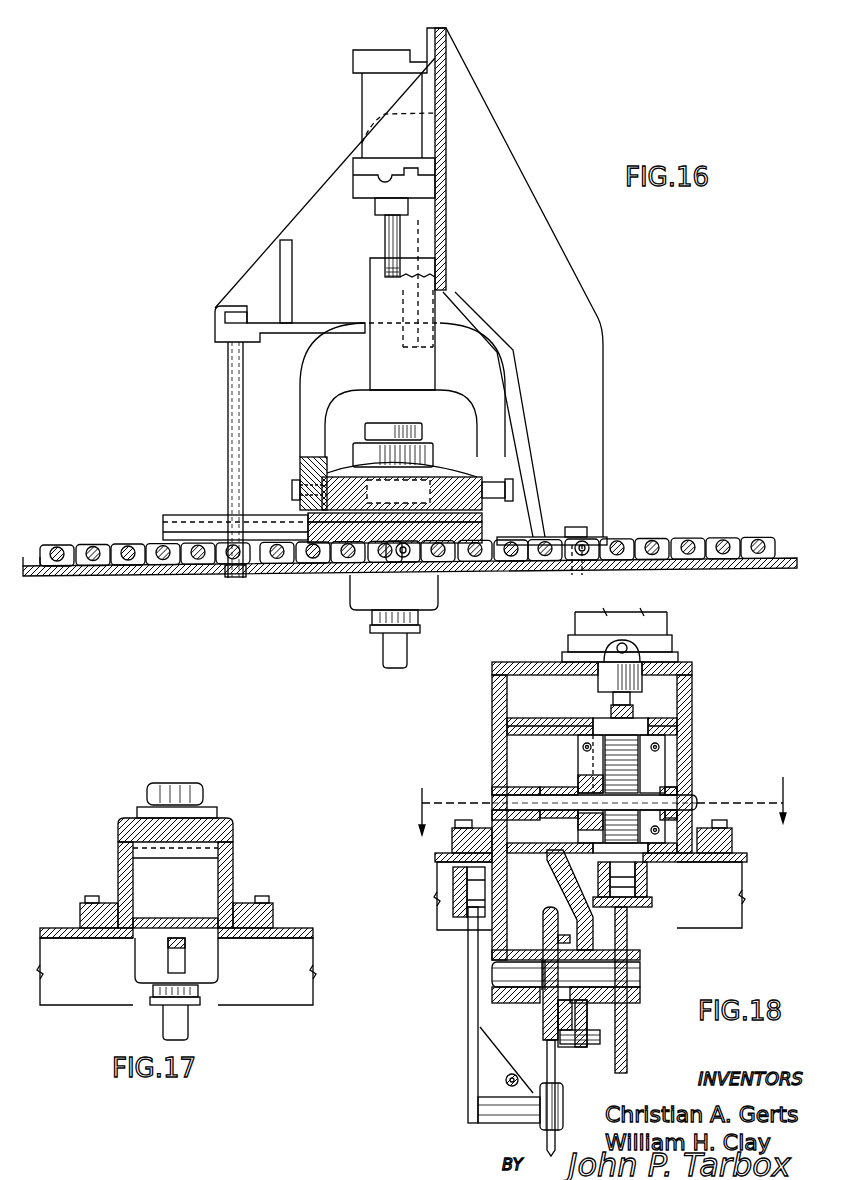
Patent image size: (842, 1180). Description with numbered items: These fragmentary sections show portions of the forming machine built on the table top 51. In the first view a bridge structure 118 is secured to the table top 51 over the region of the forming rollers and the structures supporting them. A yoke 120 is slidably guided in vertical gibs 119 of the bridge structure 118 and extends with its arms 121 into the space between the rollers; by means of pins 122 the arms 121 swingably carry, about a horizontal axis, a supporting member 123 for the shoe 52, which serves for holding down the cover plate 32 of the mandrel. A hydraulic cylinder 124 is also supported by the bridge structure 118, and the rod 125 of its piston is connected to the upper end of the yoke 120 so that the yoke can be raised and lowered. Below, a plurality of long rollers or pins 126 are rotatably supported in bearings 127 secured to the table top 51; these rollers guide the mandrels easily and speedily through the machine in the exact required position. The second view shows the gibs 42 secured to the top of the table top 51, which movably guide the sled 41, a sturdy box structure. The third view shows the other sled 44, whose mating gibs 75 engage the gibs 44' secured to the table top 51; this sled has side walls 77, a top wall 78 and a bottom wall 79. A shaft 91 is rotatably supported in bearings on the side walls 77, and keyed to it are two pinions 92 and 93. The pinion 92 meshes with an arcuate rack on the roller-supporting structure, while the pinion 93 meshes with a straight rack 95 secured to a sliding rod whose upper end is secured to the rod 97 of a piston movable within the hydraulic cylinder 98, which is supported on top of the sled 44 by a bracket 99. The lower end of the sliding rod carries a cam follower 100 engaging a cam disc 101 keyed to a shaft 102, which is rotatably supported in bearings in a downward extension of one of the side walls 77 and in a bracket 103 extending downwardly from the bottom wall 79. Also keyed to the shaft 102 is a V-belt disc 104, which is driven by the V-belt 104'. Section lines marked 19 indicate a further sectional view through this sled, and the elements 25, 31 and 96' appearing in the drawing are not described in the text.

In FIG. 16, the bridge structure 118 is at (507, 176).
In FIG. 16, the vertical gibs 119 is at (420, 243).
In FIG. 16, the yoke 120 is at (372, 306).
In FIG. 16, the arms 121 is at (305, 419).
In FIG. 16, the pins 122 is at (300, 490).
In FIG. 16, the supporting member 123 is at (443, 475).
In FIG. 16, the hydraulic cylinder 124 is at (362, 124).
In FIG. 16, the rod 125 is at (388, 244).
In FIG. 16, the long rollers or pins 126 is at (92, 545).
In FIG. 16, the bearings 127 is at (158, 549).
In FIG. 16, the shoe 52 is at (420, 490).
In FIG. 16, the cover plate 32 is at (480, 516).
In FIG. 16, the block 25 is at (475, 524).
In FIG. 16, the lower housing 31 is at (462, 557).
In FIG. 17, the sled 41 is at (233, 868).
In FIG. 17, the gibs 42 is at (273, 909).
In FIG. 17, the table top 51 is at (303, 932).
In FIG. 18, the table top 51 is at (741, 862).
In FIG. 18, the hydraulic cylinder 98 is at (662, 626).
In FIG. 18, the bracket 99 is at (690, 663).
In FIG. 18, the rod 97 is at (633, 703).
In FIG. 18, the top wall 78 is at (688, 718).
In FIG. 18, the sled 44 is at (706, 764).
In FIG. 18, the side walls 77 is at (492, 758).
In FIG. 18, the straight rack 95 is at (607, 762).
In FIG. 18, the bearing block 96' is at (607, 789).
In FIG. 18, the shaft 91 is at (558, 795).
In FIG. 18, the pinion 93 is at (627, 787).
In FIG. 18, the mating gibs 75 is at (702, 820).
In FIG. 18, the section line 19 is at (591, 800).
In FIG. 18, the pinion 92 is at (578, 825).
In FIG. 18, the bottom wall 79 is at (535, 846).
In FIG. 18, the gibs 44' is at (607, 838).
In FIG. 18, the cam follower 100 is at (640, 887).
In FIG. 18, the bracket 103 is at (577, 923).
In FIG. 18, the cam disc 101 is at (627, 935).
In FIG. 18, the shaft 102 is at (642, 975).
In FIG. 18, the V-belt disc 104 is at (526, 998).
In FIG. 18, the V-belt 104' is at (575, 1098).